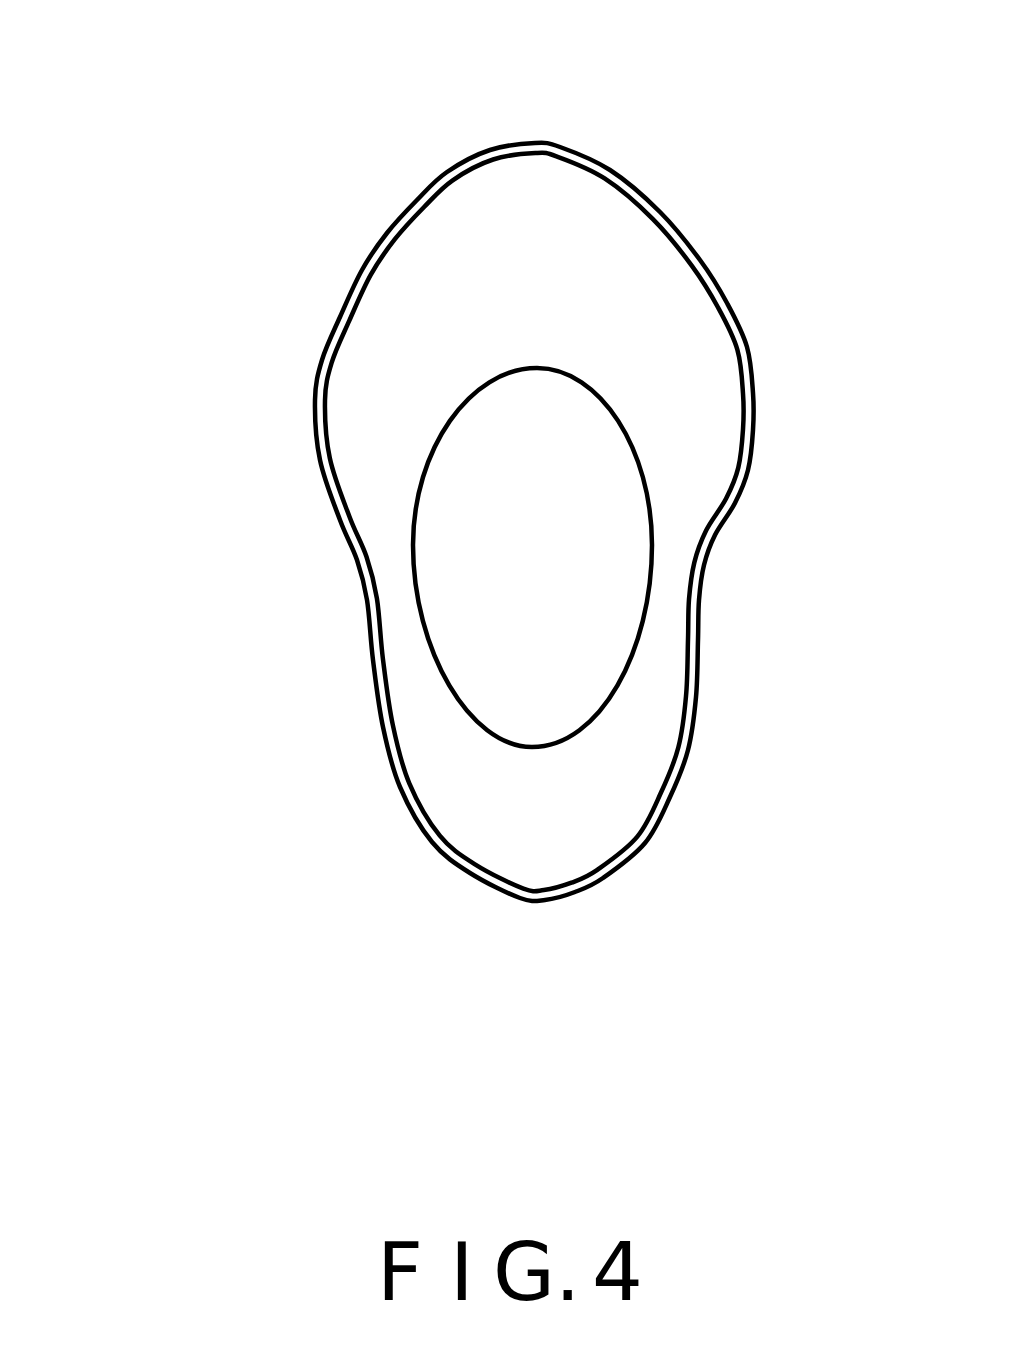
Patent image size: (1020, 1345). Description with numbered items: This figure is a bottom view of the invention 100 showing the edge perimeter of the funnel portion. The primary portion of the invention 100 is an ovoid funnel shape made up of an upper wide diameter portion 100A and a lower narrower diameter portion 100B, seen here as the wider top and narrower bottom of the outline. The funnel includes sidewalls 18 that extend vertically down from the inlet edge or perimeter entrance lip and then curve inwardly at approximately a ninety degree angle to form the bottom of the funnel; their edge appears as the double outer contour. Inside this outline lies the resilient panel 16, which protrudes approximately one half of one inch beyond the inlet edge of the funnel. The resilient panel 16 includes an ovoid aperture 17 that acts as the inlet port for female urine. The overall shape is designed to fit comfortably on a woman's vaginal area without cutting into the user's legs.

The invention 100 is at (483, 533).
The upper wide diameter portion 100A is at (663, 107).
The lower narrower diameter portion 100B is at (514, 969).
The resilient panel 16 is at (600, 522).
The ovoid aperture 17 is at (593, 568).
The sidewalls 18 is at (694, 703).